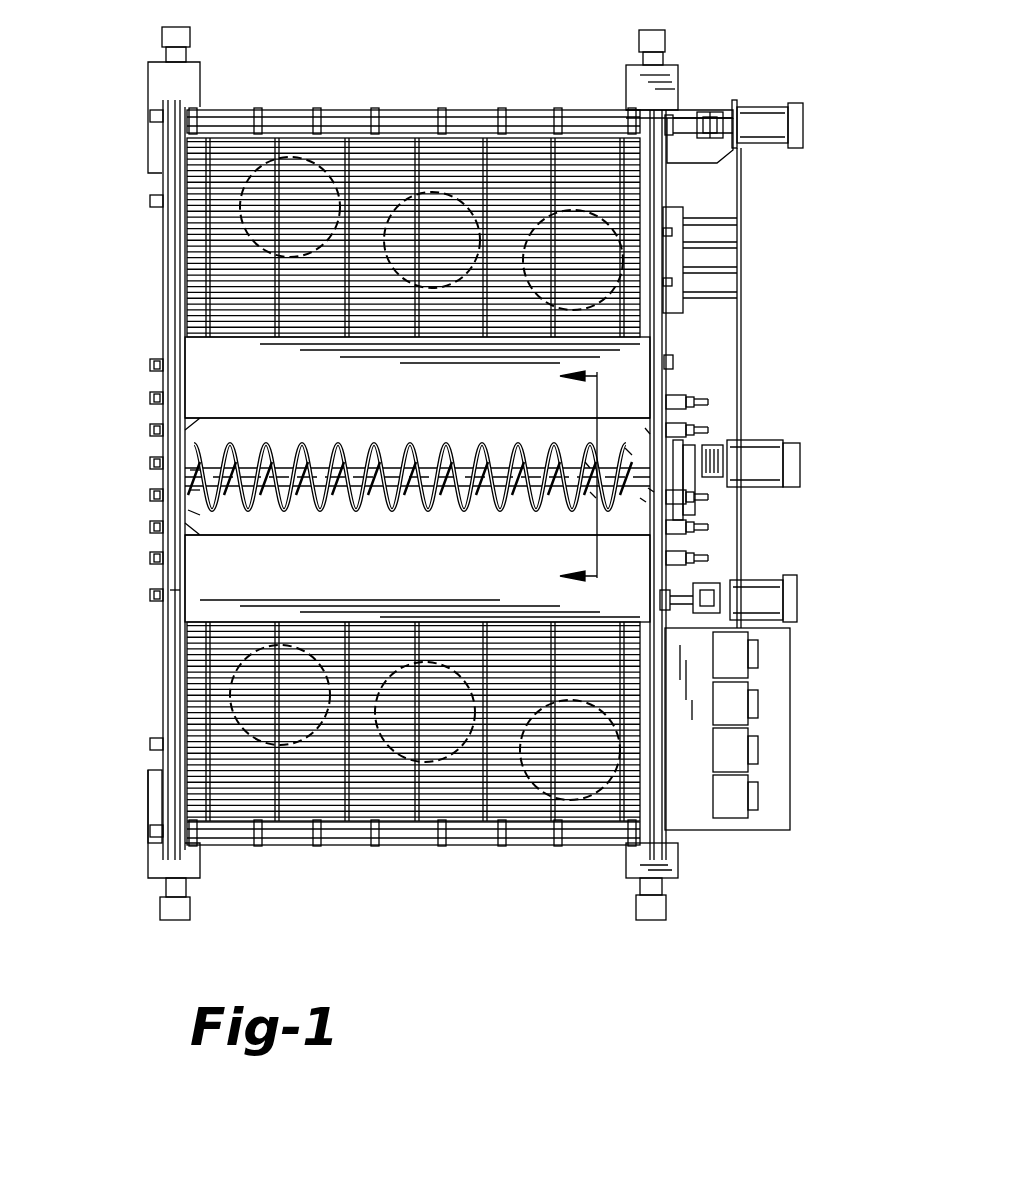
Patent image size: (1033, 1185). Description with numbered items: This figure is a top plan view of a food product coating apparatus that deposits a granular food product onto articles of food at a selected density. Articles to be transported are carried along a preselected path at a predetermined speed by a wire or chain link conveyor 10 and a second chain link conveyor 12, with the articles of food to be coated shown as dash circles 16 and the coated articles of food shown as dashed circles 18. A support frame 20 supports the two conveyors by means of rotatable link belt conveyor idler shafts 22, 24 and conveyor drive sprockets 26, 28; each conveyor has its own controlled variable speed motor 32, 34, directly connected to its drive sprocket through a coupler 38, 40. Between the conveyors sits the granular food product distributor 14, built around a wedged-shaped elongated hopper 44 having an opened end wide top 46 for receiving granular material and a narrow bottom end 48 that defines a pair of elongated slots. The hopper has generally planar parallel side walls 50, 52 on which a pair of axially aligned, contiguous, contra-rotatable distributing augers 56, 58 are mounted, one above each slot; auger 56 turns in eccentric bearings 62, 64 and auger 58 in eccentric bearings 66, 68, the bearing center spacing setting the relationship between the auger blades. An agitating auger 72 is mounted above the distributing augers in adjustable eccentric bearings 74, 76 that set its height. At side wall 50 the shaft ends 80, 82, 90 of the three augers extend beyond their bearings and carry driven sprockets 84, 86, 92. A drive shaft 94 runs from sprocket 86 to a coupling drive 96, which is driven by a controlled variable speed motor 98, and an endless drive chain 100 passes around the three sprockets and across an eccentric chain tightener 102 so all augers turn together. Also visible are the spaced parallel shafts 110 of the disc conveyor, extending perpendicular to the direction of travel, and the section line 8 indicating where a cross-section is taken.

The section line 8 is at (566, 477).
The chain link conveyor 10 is at (240, 825).
The chain link conveyor 12 is at (460, 155).
The granular food product distributor 14 is at (135, 377).
The articles of food to be coated 16 is at (430, 765).
The coated articles of food 18 is at (442, 188).
The support frame 20 is at (680, 875).
The link belt conveyor idler shaft 22 is at (540, 838).
The link belt conveyor idler shaft 24 is at (672, 362).
The conveyor drive sprocket 26 is at (680, 600).
The conveyor drive sprocket 28 is at (686, 118).
The controlled variable speed motor 32 is at (798, 615).
The controlled variable speed motor 34 is at (795, 105).
The coupler 38 is at (722, 577).
The coupler 40 is at (706, 112).
The wedged-shaped elongated hopper 44 is at (178, 622).
The opened end wide top 46 is at (205, 367).
The narrow bottom end 48 is at (200, 428).
The side wall 50 is at (645, 430).
The side wall 52 is at (172, 590).
The distributing auger 56 is at (290, 510).
The distributing auger 58 is at (288, 450).
The eccentric bearing 62 is at (650, 490).
The eccentric bearing 64 is at (195, 515).
The eccentric bearing 66 is at (628, 450).
The eccentric bearing 68 is at (200, 470).
The agitating auger 72 is at (355, 470).
The eccentric bearing 74 is at (686, 503).
The eccentric bearing 76 is at (195, 490).
The shaft end 80 is at (642, 500).
The shaft end 82 is at (585, 465).
The driven sprocket 84 is at (690, 500).
The driven sprocket 86 is at (683, 452).
The shaft end 90 is at (590, 495).
The driven sprocket 92 is at (740, 480).
The drive shaft 94 is at (722, 462).
The coupling drive 96 is at (745, 460).
The controlled variable speed motor 98 is at (792, 470).
The endless drive chain 100 is at (690, 508).
The eccentric chain tightener 102 is at (655, 445).
The shaft 110 is at (708, 556).